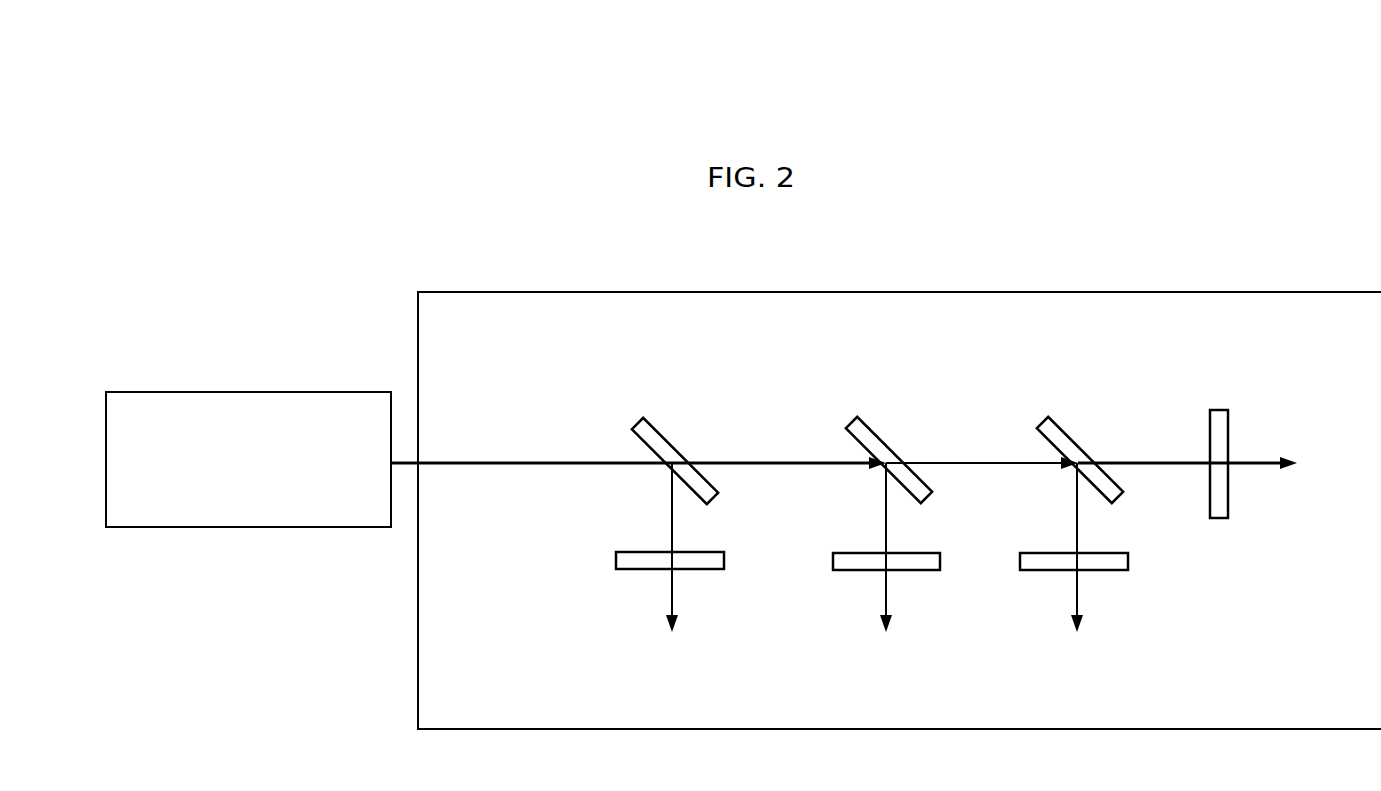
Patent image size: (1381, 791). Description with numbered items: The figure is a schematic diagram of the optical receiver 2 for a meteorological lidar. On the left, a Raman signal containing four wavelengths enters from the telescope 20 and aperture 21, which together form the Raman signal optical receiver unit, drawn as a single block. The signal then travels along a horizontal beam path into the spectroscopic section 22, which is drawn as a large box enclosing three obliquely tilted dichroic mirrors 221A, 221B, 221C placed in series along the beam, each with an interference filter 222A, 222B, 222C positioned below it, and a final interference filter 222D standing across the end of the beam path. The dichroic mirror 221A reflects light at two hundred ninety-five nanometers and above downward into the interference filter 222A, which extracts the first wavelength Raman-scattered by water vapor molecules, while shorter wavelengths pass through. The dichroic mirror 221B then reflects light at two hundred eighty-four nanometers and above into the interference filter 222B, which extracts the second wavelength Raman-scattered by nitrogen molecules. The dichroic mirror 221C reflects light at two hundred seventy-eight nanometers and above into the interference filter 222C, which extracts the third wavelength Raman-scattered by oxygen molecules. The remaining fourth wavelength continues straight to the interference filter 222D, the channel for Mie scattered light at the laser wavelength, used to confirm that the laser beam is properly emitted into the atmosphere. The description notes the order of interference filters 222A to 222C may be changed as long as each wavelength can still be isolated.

The optical receiver 2 is at (212, 285).
The telescope 20 is at (200, 392).
The aperture 21 is at (248, 459).
The spectroscopic section of the optical receiver 22 is at (1167, 292).
The dichroic mirror 221A is at (659, 416).
The dichroic mirror 221B is at (877, 420).
The dichroic mirror 221C is at (1075, 420).
The interference filter 222A is at (693, 572).
The interference filter 222B is at (917, 572).
The interference filter 222C is at (1107, 572).
The interference filter 222D is at (1225, 520).